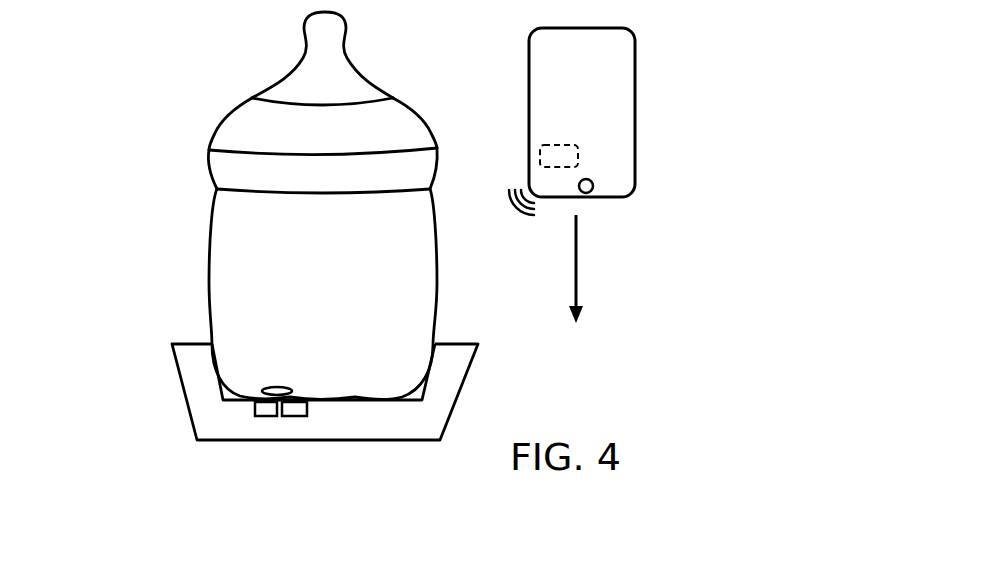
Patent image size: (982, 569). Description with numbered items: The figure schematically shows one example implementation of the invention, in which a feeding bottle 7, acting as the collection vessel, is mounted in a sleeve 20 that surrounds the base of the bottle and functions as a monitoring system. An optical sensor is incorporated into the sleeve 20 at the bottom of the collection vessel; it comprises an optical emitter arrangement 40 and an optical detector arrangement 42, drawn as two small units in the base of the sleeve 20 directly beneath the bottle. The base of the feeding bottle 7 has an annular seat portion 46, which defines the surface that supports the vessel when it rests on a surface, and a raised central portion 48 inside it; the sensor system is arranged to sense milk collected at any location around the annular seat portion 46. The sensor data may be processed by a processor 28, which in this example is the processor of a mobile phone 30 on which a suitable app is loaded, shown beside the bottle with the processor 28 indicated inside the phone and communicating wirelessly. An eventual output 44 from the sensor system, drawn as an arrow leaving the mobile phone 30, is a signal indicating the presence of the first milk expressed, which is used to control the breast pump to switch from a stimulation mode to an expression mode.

The feeding bottle 7 is at (212, 267).
The sleeve 20 is at (182, 363).
The processor 28 is at (540, 151).
The mobile phone 30 is at (528, 118).
The optical emitter arrangement 40 is at (257, 416).
The optical detector arrangement 42 is at (297, 416).
The output 44 is at (577, 292).
The annular seat portion 46 is at (267, 370).
The raised central portion 48 is at (322, 395).